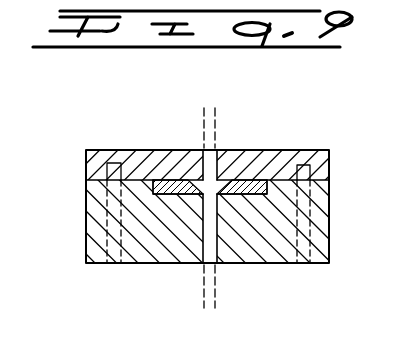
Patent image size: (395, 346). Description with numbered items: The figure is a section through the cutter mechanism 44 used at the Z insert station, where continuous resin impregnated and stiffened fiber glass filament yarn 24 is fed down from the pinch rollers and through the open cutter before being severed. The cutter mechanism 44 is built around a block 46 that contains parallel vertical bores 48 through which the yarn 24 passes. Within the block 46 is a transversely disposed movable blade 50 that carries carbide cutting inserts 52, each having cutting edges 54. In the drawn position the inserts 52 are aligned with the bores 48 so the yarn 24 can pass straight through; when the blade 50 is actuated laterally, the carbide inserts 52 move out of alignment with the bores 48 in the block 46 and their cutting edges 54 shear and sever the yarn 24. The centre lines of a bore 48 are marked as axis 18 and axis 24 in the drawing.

The central axis of nozzle 18 is at (216, 300).
The fiber glass filament yarn 24 is at (216, 130).
The cutter mechanism 44 is at (272, 157).
The block 46 is at (138, 154).
The vertical bore 48 is at (206, 248).
The movable blade 50 is at (160, 185).
The carbide cutting insert 52 is at (227, 188).
The cutting edge 54 is at (200, 188).